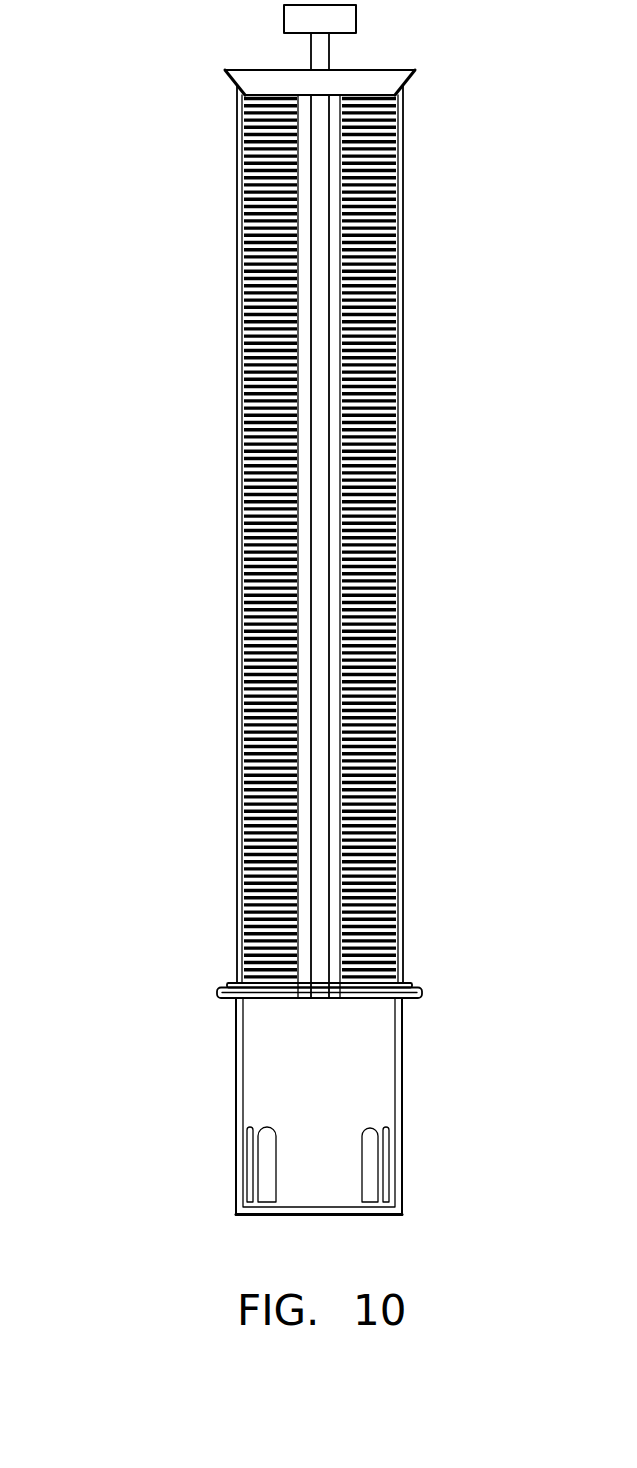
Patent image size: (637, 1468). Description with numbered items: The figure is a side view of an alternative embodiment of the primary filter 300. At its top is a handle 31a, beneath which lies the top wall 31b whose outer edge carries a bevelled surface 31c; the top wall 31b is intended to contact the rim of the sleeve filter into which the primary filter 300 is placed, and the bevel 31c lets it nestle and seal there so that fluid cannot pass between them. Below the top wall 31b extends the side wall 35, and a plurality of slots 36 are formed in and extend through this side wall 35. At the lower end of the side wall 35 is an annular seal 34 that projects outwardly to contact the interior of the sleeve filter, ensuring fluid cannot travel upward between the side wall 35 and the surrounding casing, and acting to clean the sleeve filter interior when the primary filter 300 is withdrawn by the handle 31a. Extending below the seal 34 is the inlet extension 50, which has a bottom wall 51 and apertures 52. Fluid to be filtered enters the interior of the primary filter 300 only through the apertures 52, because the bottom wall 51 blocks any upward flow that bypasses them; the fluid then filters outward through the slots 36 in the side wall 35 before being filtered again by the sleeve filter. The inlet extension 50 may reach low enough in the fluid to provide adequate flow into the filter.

The primary filter 300 is at (170, 512).
The handle 31a is at (357, 17).
The top wall 31b is at (252, 78).
The bevelled surface 31c is at (234, 84).
The annular seal 34 is at (217, 993).
The side wall 35 is at (398, 565).
The slots 36 is at (373, 185).
The inlet extension 50 is at (253, 1078).
The bottom wall 51 is at (316, 1216).
The apertures 52 is at (268, 1147).